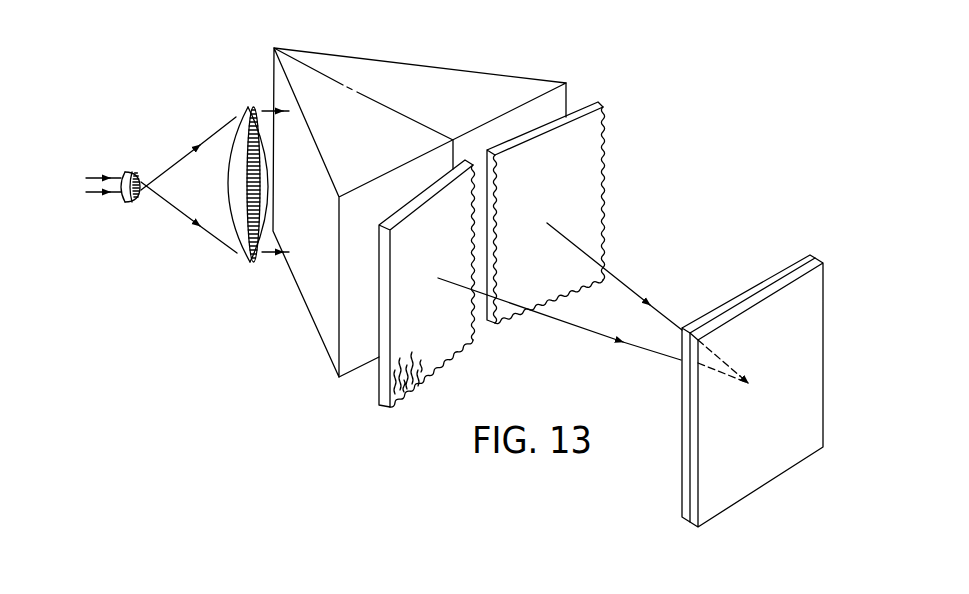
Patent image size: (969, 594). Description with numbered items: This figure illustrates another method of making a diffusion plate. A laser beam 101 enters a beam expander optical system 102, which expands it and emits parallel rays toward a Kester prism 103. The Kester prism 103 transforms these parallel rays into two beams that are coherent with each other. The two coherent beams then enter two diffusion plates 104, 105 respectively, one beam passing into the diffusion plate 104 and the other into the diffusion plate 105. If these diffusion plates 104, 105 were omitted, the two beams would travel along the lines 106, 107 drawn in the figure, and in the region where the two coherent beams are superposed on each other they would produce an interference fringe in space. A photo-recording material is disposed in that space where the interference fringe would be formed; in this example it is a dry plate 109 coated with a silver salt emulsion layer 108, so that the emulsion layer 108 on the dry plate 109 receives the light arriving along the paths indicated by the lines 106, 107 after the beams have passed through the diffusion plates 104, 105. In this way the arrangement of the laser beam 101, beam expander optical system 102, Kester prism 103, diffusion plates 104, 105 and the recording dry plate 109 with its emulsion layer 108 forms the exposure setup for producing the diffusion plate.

The laser beam 101 is at (98, 173).
The beam expander optical system 102 is at (258, 87).
The Kester prism 103 is at (418, 75).
The diffusion plate 104 is at (383, 388).
The diffusion plate 105 is at (594, 105).
The line 106 is at (560, 321).
The line 107 is at (632, 283).
The silver salt emulsion layer 108 is at (770, 278).
The dry plate 109 is at (823, 262).